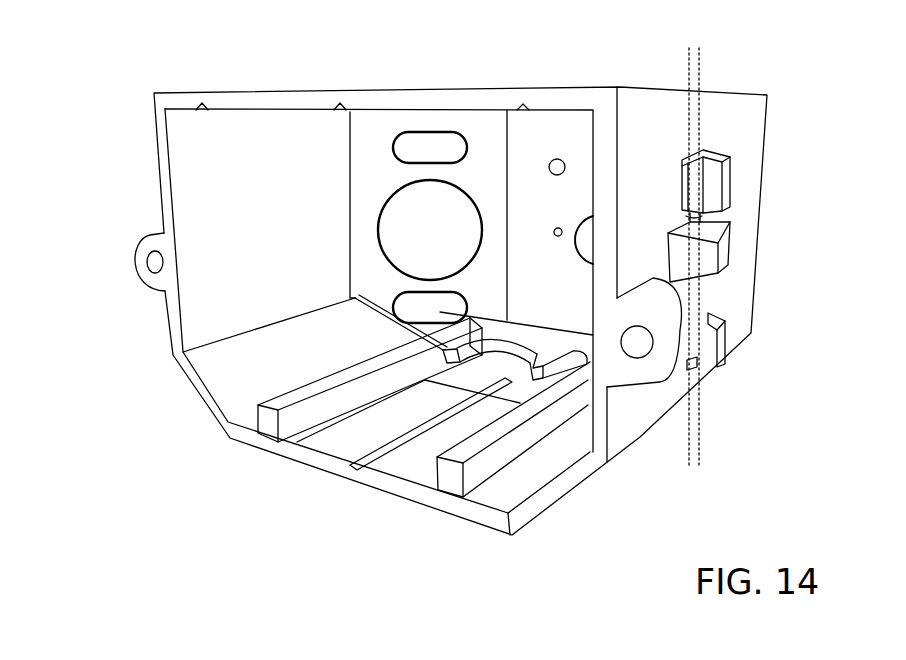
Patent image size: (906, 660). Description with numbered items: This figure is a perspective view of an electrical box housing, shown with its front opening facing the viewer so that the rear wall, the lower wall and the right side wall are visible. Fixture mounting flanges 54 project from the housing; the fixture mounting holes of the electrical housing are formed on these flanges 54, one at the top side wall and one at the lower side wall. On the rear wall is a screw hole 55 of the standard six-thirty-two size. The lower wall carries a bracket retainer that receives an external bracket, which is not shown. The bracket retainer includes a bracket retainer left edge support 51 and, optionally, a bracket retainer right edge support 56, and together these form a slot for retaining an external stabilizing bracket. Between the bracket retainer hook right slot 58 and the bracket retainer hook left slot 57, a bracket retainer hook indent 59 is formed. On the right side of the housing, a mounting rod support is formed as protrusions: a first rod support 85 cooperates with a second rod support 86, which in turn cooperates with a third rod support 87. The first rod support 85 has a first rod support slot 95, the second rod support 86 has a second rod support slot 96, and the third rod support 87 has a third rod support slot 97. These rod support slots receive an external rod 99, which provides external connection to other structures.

The bracket retainer left edge support 51 is at (268, 420).
The fixture mounting flanges 54 is at (158, 234).
The 6-32 screw hole 55 is at (557, 228).
The bracket retainer right edge support 56 is at (463, 485).
The bracket retainer hook left slot 57 is at (440, 350).
The bracket retainer hook right slot 58 is at (557, 364).
The bracket retainer hook indent 59 is at (517, 338).
The first rod support 85 is at (727, 182).
The second rod support 86 is at (720, 257).
The third rod support 87 is at (727, 350).
The first rod support slot 95 is at (703, 152).
The second rod support slot 96 is at (690, 216).
The third rod support slot 97 is at (700, 378).
The external rod 99 is at (698, 447).